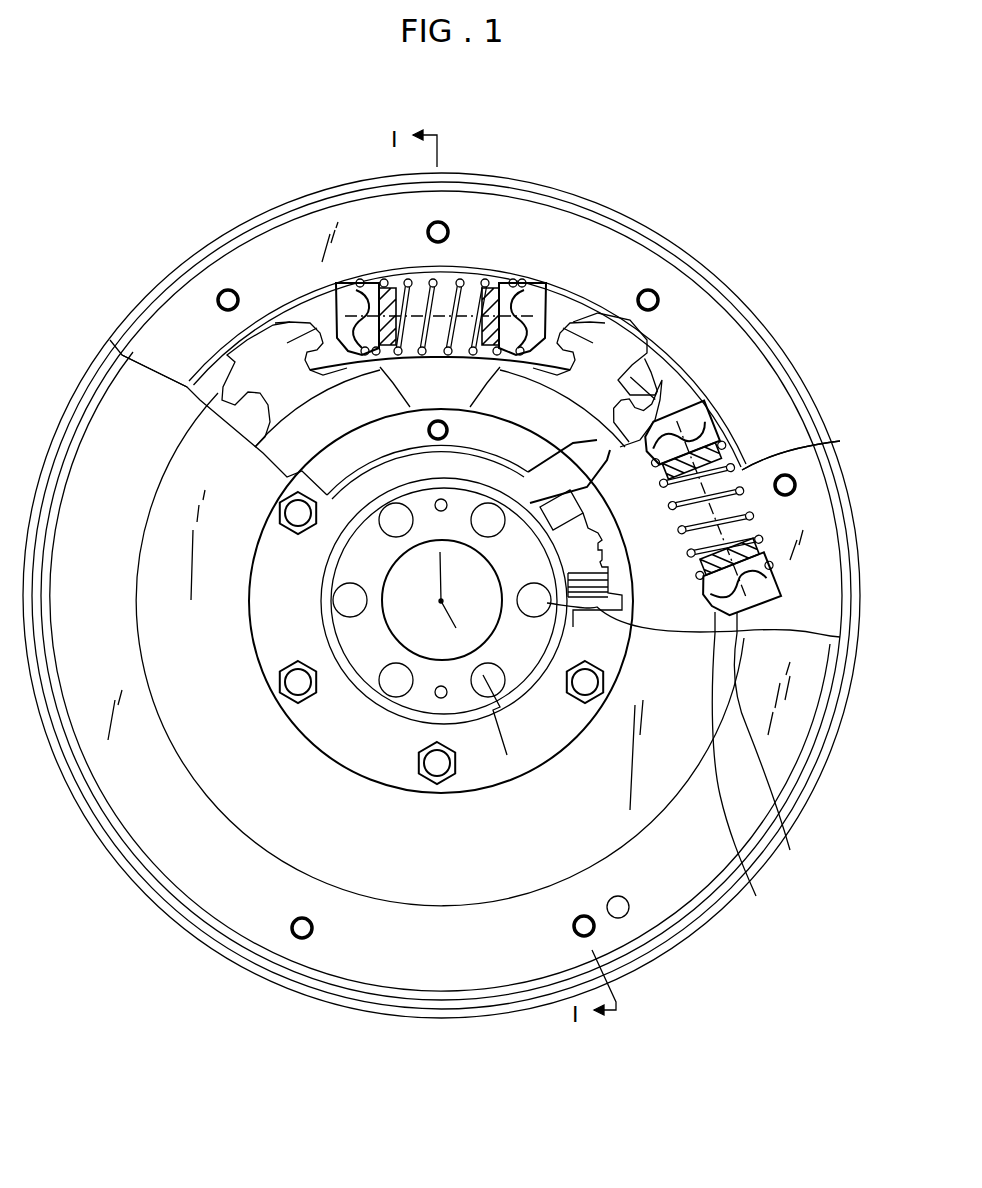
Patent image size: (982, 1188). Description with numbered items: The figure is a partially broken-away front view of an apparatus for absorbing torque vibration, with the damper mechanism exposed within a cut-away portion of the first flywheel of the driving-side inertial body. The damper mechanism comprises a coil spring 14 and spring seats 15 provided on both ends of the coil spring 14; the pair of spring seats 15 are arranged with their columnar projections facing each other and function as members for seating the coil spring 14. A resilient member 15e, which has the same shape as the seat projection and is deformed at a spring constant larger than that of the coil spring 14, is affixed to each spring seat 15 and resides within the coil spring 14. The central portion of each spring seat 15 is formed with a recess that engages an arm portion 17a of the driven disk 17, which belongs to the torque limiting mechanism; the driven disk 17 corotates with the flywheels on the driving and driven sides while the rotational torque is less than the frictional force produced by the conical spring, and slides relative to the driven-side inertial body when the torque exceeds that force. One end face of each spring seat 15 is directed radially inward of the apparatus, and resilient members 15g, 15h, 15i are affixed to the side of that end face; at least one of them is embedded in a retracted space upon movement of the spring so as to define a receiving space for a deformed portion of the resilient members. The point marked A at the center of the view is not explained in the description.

The coil spring 14 is at (467, 270).
The spring seat 15 is at (578, 300).
The resilient member 15e is at (548, 308).
The resilient member 15g is at (790, 850).
The resilient member 15h is at (307, 362).
The resilient member 15i is at (755, 893).
The driven disk 17 is at (272, 325).
The arm portion 17a is at (307, 323).
The rotation axis A is at (453, 590).